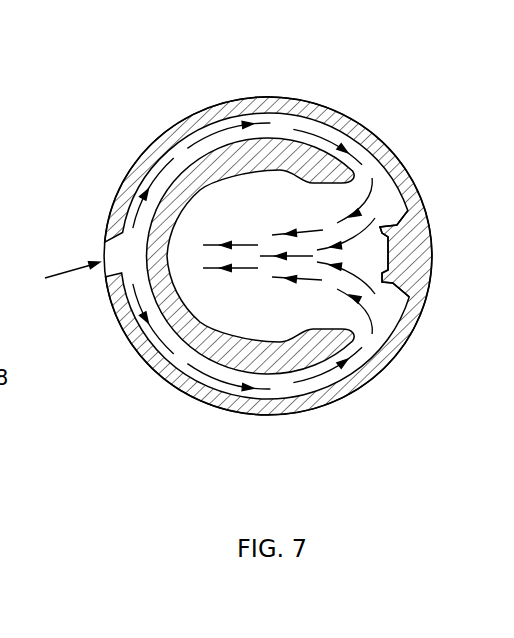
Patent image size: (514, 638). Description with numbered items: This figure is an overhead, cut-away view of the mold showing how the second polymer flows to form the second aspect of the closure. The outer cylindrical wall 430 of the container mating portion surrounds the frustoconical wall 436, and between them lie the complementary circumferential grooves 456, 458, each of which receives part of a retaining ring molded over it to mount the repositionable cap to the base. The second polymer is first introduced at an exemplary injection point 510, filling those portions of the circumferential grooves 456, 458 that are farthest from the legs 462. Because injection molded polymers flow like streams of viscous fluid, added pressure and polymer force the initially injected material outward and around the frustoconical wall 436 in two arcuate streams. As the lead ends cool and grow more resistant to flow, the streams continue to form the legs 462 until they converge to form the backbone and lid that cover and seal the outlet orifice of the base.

The cylindrical wall 430 is at (265, 97).
The frustoconical wall 436 is at (280, 363).
The circumferential groove 456 is at (138, 192).
The circumferential groove 458 is at (140, 318).
The legs 462 is at (380, 180).
The injection point 510 is at (51, 281).